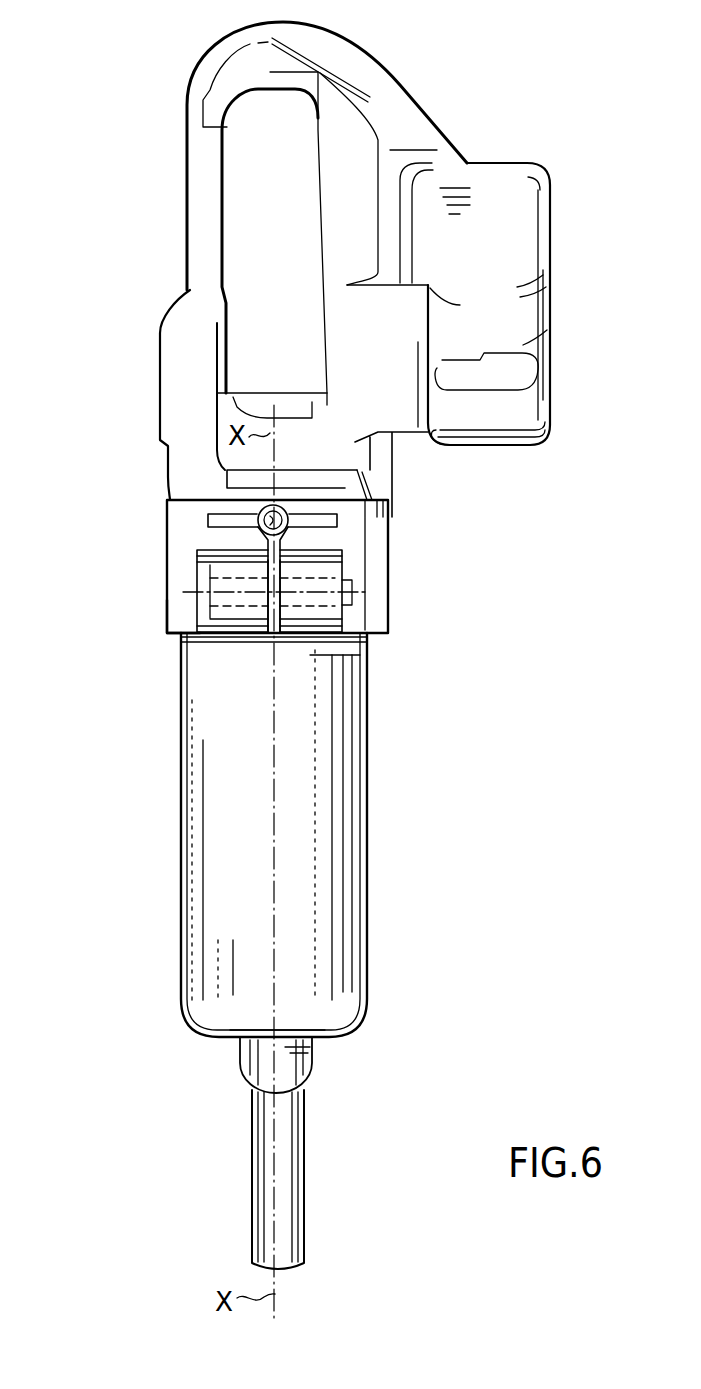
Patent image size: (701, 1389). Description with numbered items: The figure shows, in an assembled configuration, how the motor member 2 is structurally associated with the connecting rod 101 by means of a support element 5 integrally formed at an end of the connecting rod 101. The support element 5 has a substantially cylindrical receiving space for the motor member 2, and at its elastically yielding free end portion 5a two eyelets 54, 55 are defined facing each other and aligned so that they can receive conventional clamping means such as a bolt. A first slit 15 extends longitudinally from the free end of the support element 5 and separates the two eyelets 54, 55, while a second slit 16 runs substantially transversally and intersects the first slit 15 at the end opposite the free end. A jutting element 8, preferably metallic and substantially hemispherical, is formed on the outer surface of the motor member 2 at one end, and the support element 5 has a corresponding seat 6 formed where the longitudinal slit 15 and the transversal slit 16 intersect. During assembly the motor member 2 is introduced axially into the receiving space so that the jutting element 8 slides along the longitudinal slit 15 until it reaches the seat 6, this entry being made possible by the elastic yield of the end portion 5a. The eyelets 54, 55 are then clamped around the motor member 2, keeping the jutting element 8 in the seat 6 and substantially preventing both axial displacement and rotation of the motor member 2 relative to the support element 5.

The connecting rod 101 is at (200, 75).
The support element 5 is at (180, 525).
The free end portion 5a is at (126, 629).
The seat 6 is at (258, 519).
The jutting element 8 is at (293, 518).
The second slit 16 is at (330, 521).
The first slit 15 is at (275, 633).
The eyelet 54 is at (327, 617).
The eyelet 55 is at (230, 618).
The motor member 2 is at (207, 868).